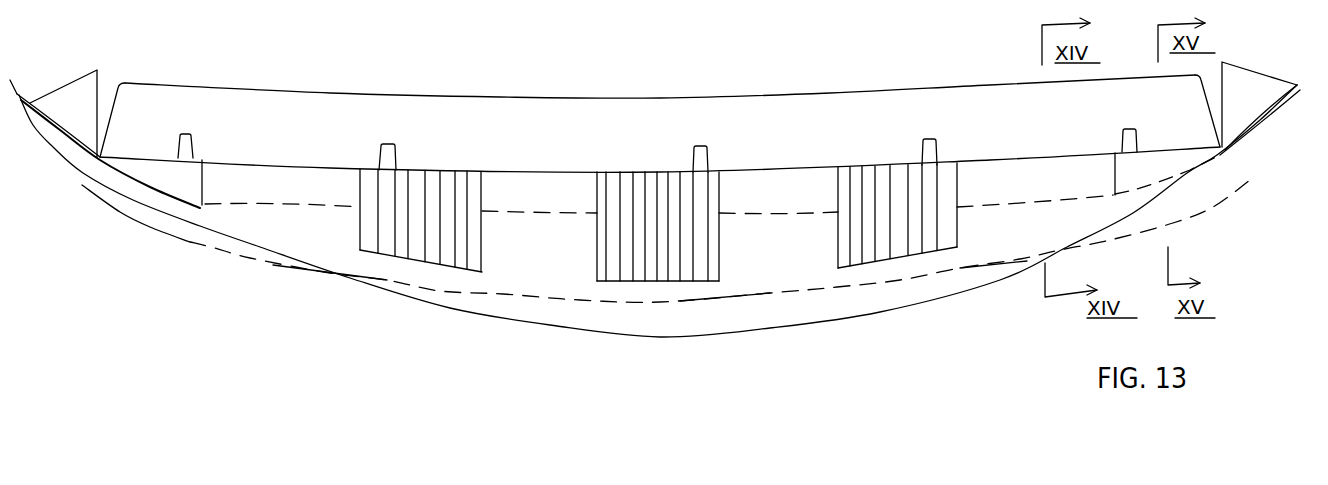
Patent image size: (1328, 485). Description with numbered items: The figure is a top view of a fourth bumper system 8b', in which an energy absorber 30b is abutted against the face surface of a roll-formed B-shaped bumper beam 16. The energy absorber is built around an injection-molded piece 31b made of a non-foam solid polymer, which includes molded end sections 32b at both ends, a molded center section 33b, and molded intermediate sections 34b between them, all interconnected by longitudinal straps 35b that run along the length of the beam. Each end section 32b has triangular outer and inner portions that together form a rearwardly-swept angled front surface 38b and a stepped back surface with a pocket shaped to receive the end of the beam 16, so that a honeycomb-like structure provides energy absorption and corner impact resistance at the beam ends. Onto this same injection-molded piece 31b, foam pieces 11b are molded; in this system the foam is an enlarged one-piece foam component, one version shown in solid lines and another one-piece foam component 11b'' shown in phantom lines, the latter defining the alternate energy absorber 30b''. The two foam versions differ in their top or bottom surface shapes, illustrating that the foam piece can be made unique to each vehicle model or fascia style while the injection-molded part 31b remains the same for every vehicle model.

The bumper beam 16 is at (682, 105).
The injection-molded piece 31b is at (555, 192).
The end sections 32b is at (80, 123).
The rearwardly-swept angled front surface 38b is at (168, 192).
The longitudinal straps 35b is at (312, 209).
The intermediate sections 34b is at (418, 253).
The center section 33b is at (657, 281).
The energy absorber 30b is at (658, 279).
The energy absorber 30b'' is at (666, 325).
The one-piece foam component 11b'' is at (176, 339).
The foam pieces 11b is at (337, 368).
The fourth bumper system 8b' is at (235, 416).